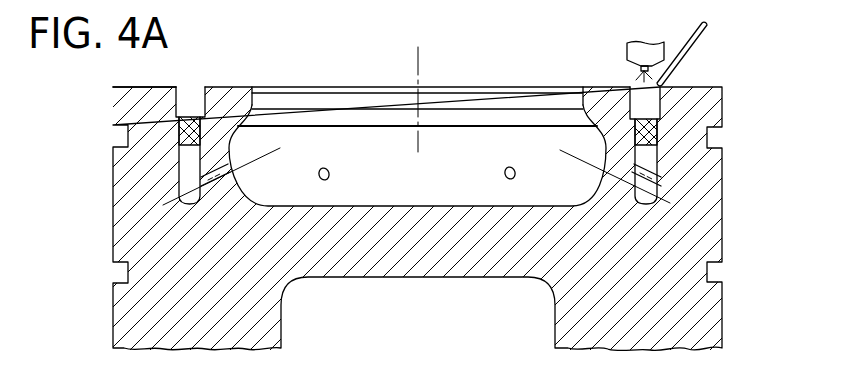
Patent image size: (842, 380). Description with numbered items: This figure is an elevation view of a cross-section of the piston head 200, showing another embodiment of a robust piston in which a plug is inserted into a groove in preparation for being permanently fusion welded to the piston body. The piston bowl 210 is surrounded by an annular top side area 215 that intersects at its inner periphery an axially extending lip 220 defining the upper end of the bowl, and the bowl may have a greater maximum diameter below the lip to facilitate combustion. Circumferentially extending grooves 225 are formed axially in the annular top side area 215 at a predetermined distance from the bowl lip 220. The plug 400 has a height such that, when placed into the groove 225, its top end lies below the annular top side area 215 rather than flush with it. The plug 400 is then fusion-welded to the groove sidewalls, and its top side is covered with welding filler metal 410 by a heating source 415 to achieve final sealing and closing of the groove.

The piston head 200 is at (101, 231).
The piston bowl 210 is at (468, 113).
The annular top side area 215 is at (130, 87).
The axially extending lip 220 is at (292, 103).
The circumferentially extending groove 225 is at (190, 100).
The plug 400 is at (655, 129).
The welding filler metal 410 is at (694, 48).
The heating source 415 is at (640, 41).